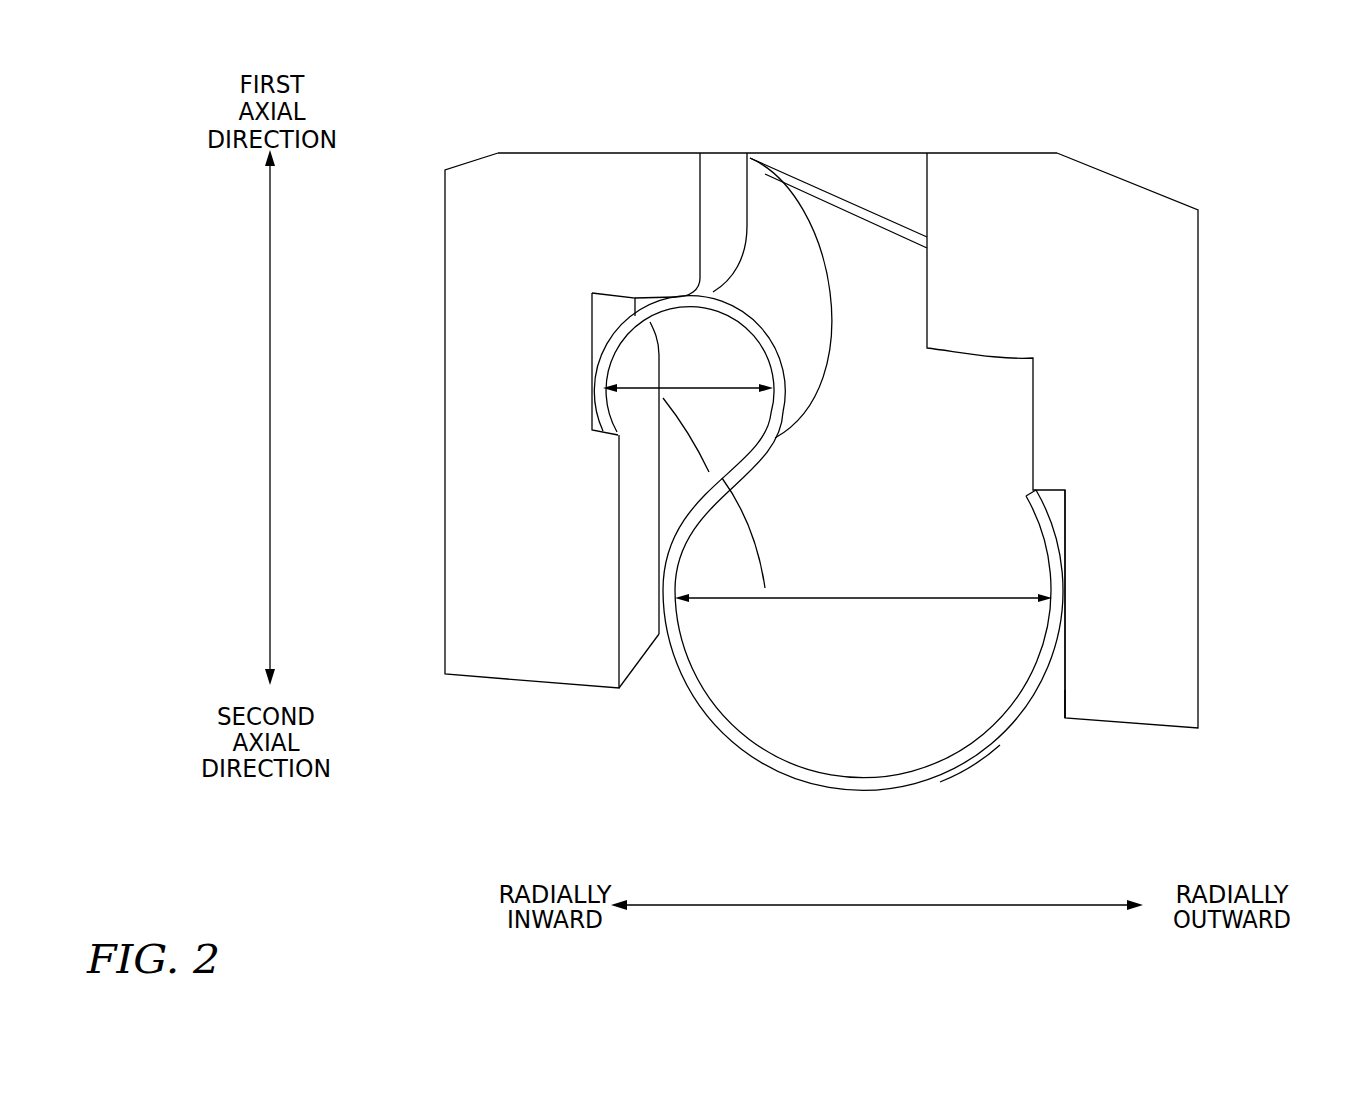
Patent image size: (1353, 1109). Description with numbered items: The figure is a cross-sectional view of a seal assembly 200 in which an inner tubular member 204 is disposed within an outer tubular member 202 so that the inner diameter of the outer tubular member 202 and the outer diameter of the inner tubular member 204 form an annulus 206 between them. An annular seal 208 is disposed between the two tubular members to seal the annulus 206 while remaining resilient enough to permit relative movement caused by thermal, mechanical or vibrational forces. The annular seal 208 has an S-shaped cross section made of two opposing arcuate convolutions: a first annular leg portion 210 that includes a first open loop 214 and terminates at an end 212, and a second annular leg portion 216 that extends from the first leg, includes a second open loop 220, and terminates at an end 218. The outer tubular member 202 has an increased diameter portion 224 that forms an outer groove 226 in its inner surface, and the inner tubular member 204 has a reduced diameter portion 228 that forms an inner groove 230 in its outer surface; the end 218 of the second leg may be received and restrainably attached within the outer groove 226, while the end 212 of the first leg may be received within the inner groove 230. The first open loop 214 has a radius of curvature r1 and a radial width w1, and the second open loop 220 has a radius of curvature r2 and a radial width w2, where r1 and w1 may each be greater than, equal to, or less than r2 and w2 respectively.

The seal assembly 200 is at (1225, 122).
The outer tubular member 202 is at (1200, 382).
The inner tubular member 204 is at (446, 542).
The annulus 206 is at (658, 658).
The annular seal 208 is at (844, 482).
The first annular leg portion 210 is at (716, 290).
The end 212 is at (597, 432).
The first open loop 214 is at (744, 312).
The second annular leg portion 216 is at (832, 789).
The end 218 is at (1027, 493).
The second open loop 220 is at (997, 742).
The increased diameter portion 224 is at (1062, 515).
The outer groove 226 is at (1062, 677).
The reduced diameter portion 228 is at (597, 322).
The inner groove 230 is at (617, 305).
The radius of curvature r1 is at (772, 347).
The radius of curvature r2 is at (968, 765).
The radial width w1 is at (688, 403).
The radial width w2 is at (863, 614).